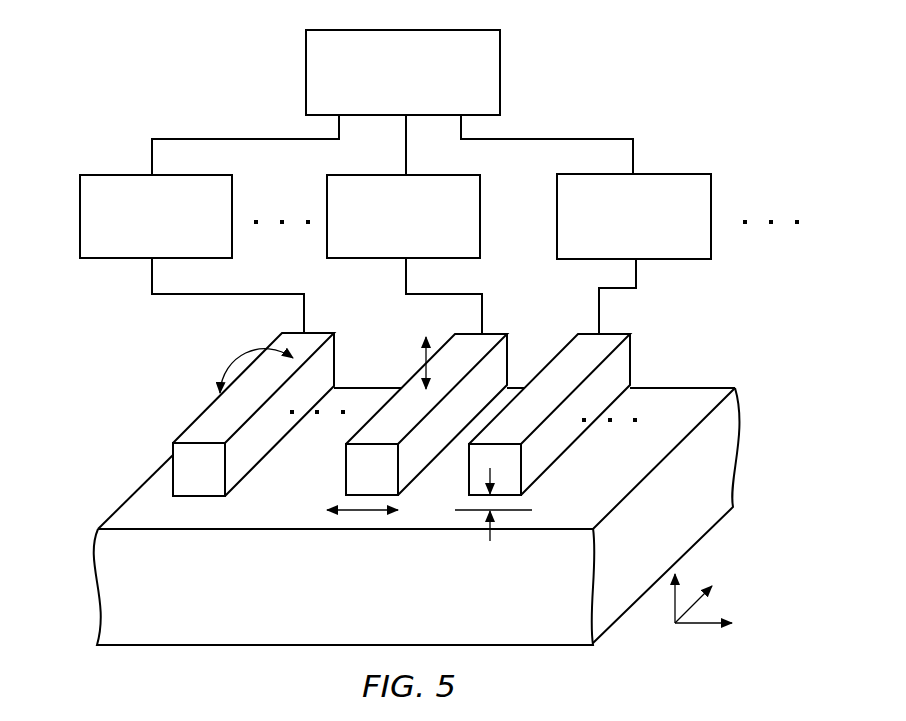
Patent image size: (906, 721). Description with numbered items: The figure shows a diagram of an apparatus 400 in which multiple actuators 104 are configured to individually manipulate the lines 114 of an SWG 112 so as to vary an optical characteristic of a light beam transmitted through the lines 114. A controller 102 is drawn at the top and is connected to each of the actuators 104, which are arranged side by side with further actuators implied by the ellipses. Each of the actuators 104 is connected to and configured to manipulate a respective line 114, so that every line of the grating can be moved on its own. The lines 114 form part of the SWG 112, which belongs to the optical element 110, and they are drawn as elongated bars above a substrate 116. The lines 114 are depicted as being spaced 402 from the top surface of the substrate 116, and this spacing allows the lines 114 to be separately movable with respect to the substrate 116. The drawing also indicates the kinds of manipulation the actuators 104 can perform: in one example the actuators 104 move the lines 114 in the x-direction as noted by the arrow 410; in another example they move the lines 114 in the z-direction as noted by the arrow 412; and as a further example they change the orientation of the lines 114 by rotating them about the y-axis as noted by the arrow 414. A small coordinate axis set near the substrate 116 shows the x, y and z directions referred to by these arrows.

The apparatus 400 is at (163, 89).
The controller 102 is at (423, 97).
The actuator 104 is at (650, 242).
The optical element 110 is at (124, 384).
The SWG 112 is at (665, 333).
The line 114 is at (573, 463).
The substrate 116 is at (238, 594).
The spacing 402 is at (497, 503).
The arrow 410 is at (363, 512).
The arrow 412 is at (424, 362).
The arrow 414 is at (222, 362).